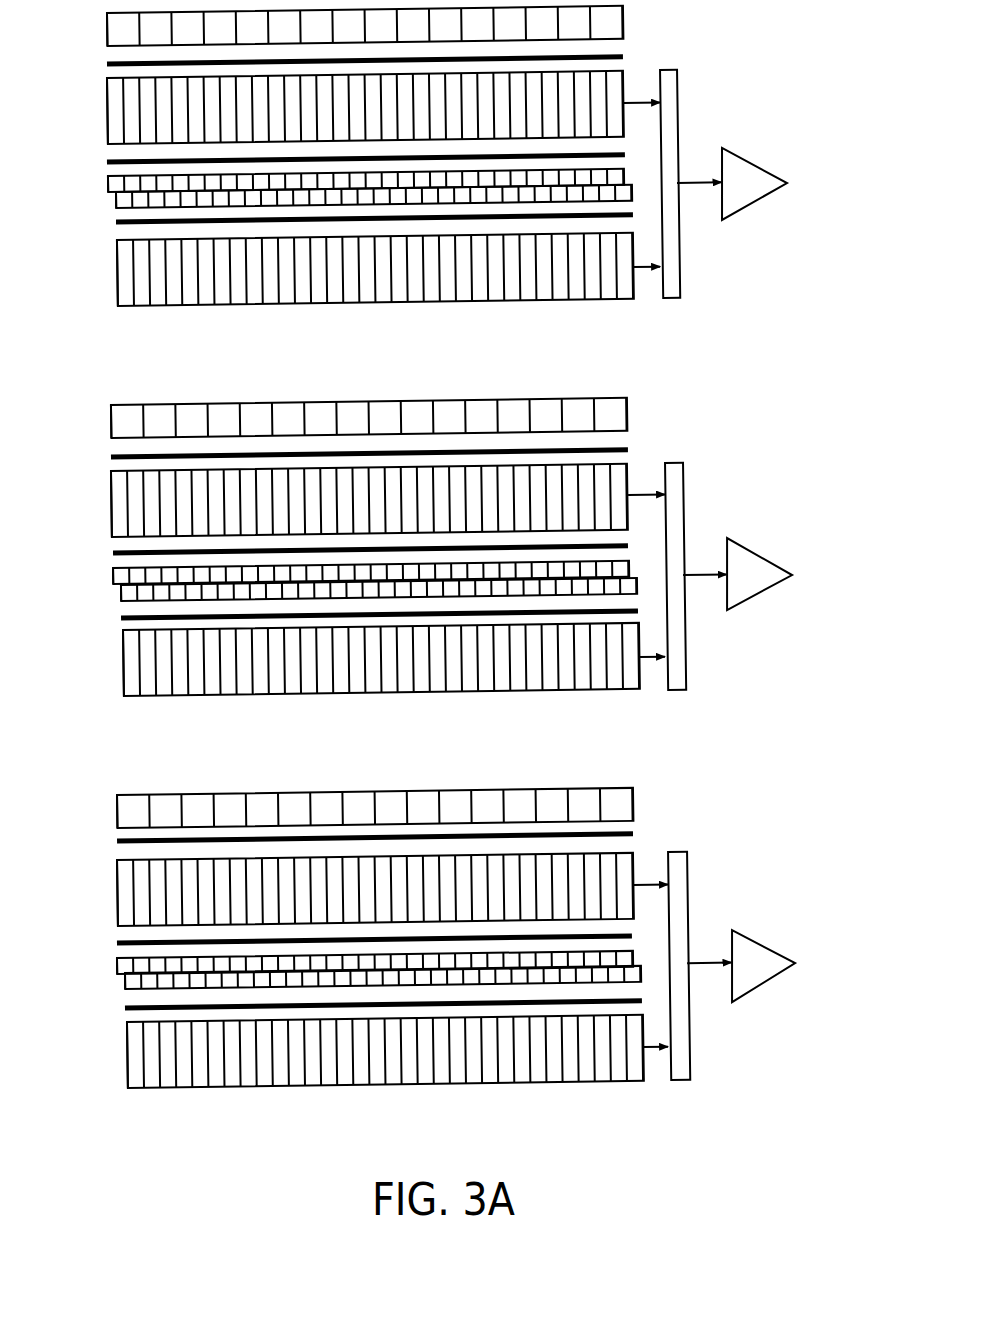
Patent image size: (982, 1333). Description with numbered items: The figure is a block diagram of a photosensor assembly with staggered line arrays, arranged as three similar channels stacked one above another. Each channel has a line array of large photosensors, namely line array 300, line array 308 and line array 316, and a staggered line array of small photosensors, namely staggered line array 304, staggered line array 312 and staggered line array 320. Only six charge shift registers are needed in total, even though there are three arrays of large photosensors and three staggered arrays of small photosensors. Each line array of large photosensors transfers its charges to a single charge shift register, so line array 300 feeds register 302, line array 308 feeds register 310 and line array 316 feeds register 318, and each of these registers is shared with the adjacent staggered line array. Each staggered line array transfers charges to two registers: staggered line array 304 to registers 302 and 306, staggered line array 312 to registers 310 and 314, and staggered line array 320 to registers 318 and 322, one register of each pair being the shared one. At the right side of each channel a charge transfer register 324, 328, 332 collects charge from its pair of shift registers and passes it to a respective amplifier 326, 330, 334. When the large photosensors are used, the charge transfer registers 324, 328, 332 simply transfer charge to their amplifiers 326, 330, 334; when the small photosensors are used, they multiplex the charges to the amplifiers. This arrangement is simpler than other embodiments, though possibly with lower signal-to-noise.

The line array of large photosensors 300 is at (108, 30).
The charge shift register 302 is at (107, 110).
The staggered line array of small photosensors 304 is at (107, 194).
The charge shift register 306 is at (115, 272).
The line array of large photosensors 308 is at (106, 420).
The charge shift register 310 is at (105, 503).
The staggered line array of small photosensors 312 is at (106, 586).
The charge shift register 314 is at (115, 665).
The line array of large photosensors 316 is at (107, 810).
The charge shift register 318 is at (106, 893).
The staggered line array of small photosensors 320 is at (105, 976).
The charge shift register 322 is at (114, 1058).
The charge transfer register 324 is at (677, 139).
The amplifier 326 is at (762, 202).
The charge transfer register 328 is at (677, 534).
The amplifier 330 is at (762, 593).
The charge transfer register 332 is at (676, 924).
The amplifier 334 is at (761, 985).